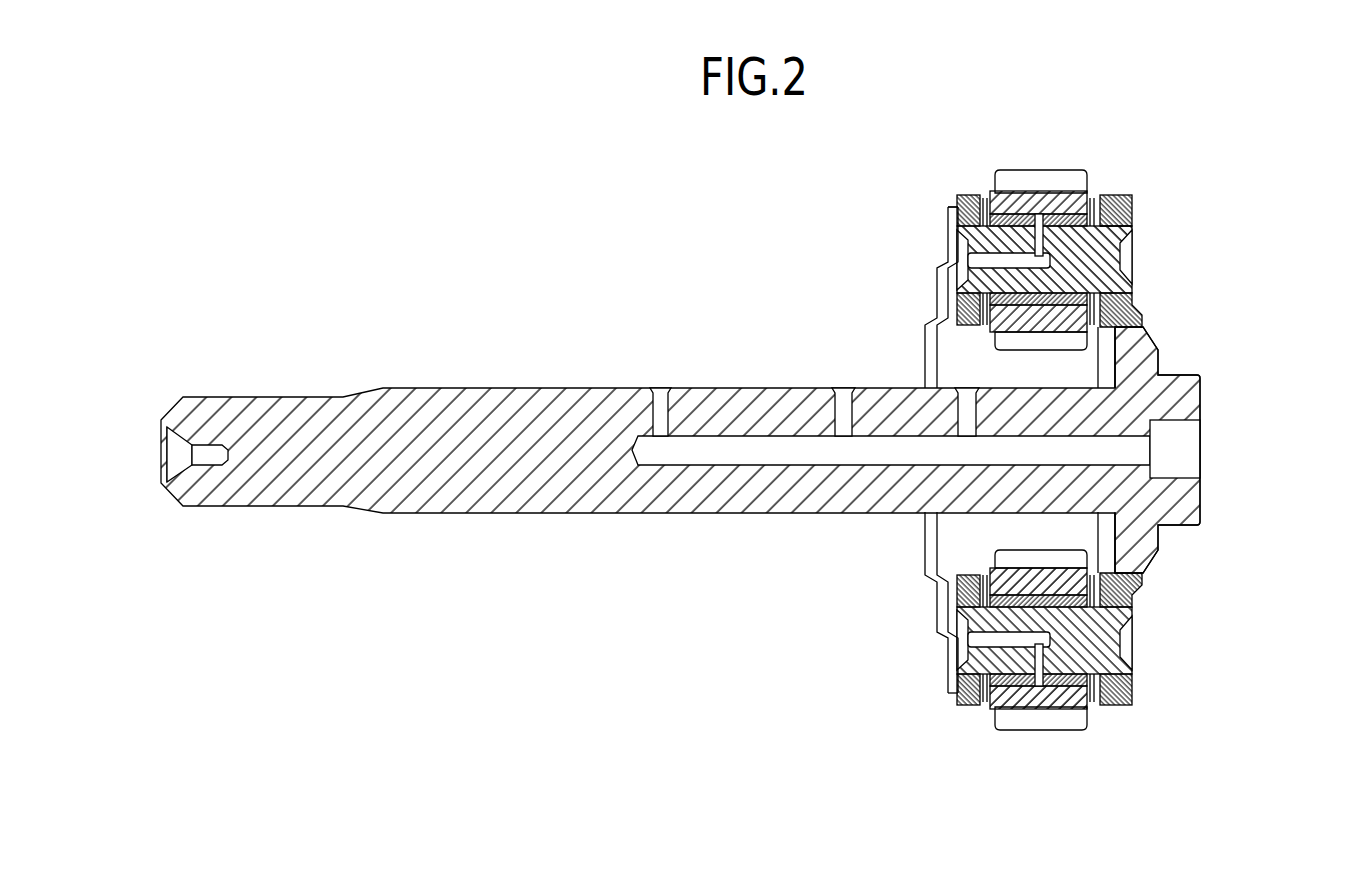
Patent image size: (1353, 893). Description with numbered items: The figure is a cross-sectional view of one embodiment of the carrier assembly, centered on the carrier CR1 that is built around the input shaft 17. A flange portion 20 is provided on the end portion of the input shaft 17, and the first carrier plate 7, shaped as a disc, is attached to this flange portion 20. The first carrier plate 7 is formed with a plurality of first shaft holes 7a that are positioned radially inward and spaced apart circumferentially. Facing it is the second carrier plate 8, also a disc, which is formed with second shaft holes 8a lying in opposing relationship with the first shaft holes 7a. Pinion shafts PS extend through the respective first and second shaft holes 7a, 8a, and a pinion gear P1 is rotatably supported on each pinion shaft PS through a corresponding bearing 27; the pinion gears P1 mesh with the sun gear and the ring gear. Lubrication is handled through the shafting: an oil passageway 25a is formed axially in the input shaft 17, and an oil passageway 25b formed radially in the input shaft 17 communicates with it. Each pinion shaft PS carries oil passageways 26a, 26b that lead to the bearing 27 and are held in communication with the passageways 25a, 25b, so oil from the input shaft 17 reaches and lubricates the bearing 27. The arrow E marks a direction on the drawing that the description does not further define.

The input shaft 17 is at (565, 395).
The flange portion 20 is at (1147, 362).
The oil passageway 25a is at (905, 463).
The oil passageway 25b is at (967, 410).
The second carrier plate 8 is at (958, 205).
The second shaft holes 8a is at (949, 231).
The first carrier plate 7 is at (1133, 197).
The first shaft holes 7a is at (1135, 228).
The bearing 27 is at (1088, 198).
The pinion gear P1 is at (1062, 188).
The pinion shaft PS is at (1105, 275).
The oil passageway 26a is at (968, 262).
The oil passageway 26b is at (1038, 214).
The carrier CR1 is at (912, 193).
The engine side direction E is at (1240, 450).